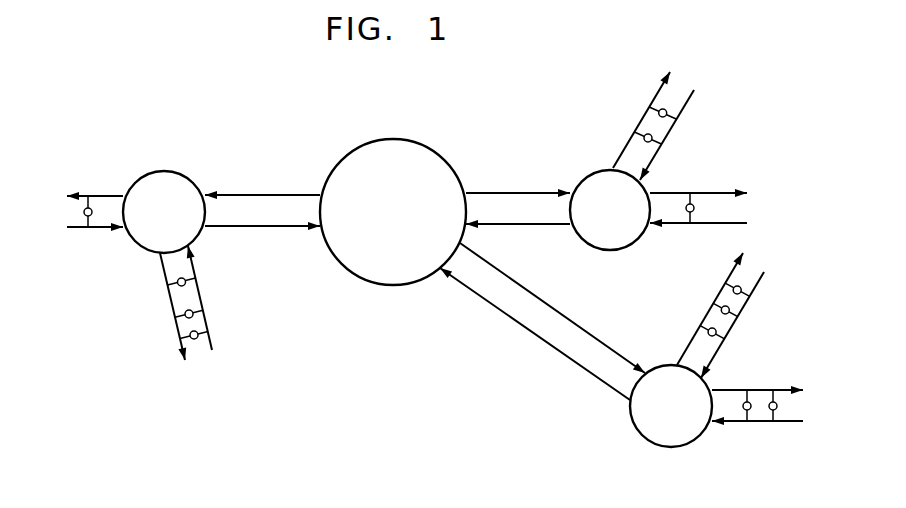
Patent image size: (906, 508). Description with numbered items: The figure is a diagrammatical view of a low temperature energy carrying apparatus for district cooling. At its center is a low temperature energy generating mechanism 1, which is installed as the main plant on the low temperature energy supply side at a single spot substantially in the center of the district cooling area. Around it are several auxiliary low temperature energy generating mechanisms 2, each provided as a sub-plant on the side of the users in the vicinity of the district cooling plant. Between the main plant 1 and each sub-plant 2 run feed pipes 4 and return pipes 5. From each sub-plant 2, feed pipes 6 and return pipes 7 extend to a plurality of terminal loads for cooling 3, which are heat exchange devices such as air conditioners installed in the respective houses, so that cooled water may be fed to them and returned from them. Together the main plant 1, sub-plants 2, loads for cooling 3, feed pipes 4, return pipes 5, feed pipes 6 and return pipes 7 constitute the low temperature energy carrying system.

The low temperature energy generating mechanism 1 is at (392, 284).
The auxiliary low temperature energy generating mechanism 2 is at (163, 171).
The terminal load for cooling 3 is at (84, 212).
The feed pipe 4 is at (263, 193).
The return pipe 5 is at (262, 228).
The feed pipe 6 is at (105, 195).
The return pipe 7 is at (103, 233).